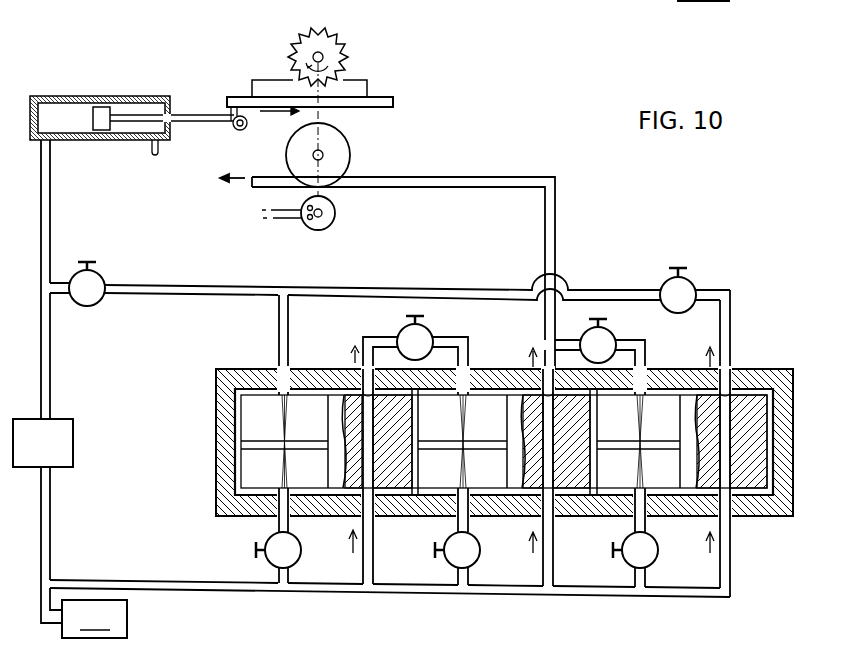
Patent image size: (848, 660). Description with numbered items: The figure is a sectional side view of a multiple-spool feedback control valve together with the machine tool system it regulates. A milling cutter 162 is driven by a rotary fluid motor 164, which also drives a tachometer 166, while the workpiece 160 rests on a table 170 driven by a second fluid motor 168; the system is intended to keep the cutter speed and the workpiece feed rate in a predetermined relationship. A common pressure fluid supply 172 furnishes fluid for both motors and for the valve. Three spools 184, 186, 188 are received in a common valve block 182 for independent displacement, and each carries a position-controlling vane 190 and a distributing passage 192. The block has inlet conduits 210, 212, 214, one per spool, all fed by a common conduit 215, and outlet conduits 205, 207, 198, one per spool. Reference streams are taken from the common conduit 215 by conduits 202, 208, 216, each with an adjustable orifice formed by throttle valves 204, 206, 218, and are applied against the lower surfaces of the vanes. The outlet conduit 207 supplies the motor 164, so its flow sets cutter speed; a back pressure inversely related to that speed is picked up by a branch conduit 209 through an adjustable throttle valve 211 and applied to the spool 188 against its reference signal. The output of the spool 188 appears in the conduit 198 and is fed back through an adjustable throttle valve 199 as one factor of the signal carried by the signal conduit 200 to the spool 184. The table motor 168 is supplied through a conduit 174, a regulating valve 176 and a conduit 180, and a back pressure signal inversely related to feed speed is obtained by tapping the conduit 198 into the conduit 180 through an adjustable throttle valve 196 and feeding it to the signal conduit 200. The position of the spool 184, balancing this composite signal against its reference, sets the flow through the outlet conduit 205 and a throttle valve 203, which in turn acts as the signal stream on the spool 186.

The workpiece 160 is at (270, 78).
The milling cutter 162 is at (345, 52).
The rotary fluid motor 164 is at (351, 153).
The tachometer 166 is at (336, 214).
The fluid motor 168 is at (80, 141).
The table 170 is at (394, 103).
The common pressure fluid supply 172 is at (94, 619).
The conduit 174 is at (51, 558).
The regulating valve 176 is at (63, 468).
The conduit 180 is at (51, 212).
The common valve block 182 is at (793, 421).
The spool 184 is at (334, 400).
The spool 186 is at (513, 400).
The spool 188 is at (691, 405).
The position-controlling vane 190 is at (252, 443).
The distributing passage 192 is at (370, 452).
The adjustable throttle valve 196 is at (101, 275).
The outlet conduit 198 is at (731, 365).
The adjustable throttle valve 199 is at (692, 283).
The signal conduit 200 is at (278, 353).
The conduit 202 is at (289, 577).
The throttle valve 203 is at (403, 330).
The throttle valve 204 is at (296, 538).
The outlet conduit 205 is at (455, 337).
The throttle valve 206 is at (476, 538).
The outlet conduit 207 is at (556, 232).
The conduit 208 is at (458, 531).
The branch conduit 209 is at (642, 340).
The inlet conduit 210 is at (374, 576).
The adjustable throttle valve 211 is at (613, 331).
The inlet conduit 212 is at (553, 577).
The inlet conduit 214 is at (731, 577).
The common conduit 215 is at (182, 590).
The conduit 216 is at (647, 581).
The throttle valve 218 is at (654, 538).